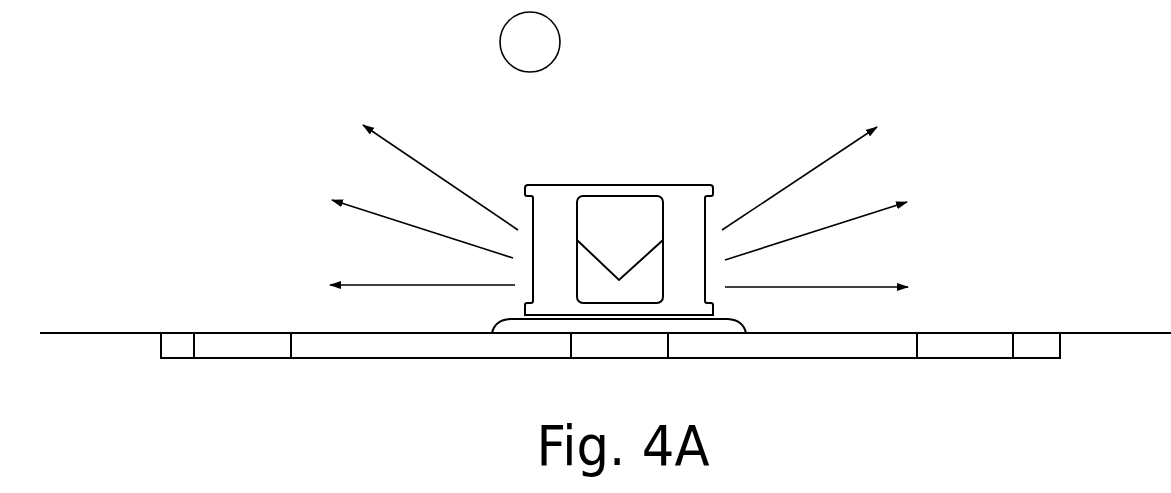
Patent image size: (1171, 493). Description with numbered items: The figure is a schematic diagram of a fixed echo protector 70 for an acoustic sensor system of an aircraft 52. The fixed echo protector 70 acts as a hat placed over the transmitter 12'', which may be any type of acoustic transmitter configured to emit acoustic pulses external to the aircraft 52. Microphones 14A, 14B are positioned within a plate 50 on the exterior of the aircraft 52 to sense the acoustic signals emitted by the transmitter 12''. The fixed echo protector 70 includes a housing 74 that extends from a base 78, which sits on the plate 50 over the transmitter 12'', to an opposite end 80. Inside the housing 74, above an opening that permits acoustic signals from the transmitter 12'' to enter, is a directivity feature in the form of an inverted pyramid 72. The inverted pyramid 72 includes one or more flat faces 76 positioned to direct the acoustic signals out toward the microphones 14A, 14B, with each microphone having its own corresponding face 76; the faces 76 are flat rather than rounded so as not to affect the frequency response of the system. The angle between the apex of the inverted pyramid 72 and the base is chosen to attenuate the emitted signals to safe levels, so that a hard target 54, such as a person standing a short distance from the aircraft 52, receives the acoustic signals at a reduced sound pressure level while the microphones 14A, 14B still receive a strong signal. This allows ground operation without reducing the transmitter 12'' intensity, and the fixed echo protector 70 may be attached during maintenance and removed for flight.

The hard target 54 is at (516, 54).
The fixed echo protector 70 is at (640, 186).
The inverted pyramid 72 is at (607, 208).
The opposite end 80 is at (625, 185).
The housing 74 is at (707, 210).
The faces 76 is at (605, 247).
The base 78 is at (493, 332).
The microphone 14A is at (240, 333).
The microphone 14B is at (963, 333).
The aircraft 52 is at (1093, 333).
The plate 50 is at (398, 358).
The transmitter 12'' is at (649, 373).